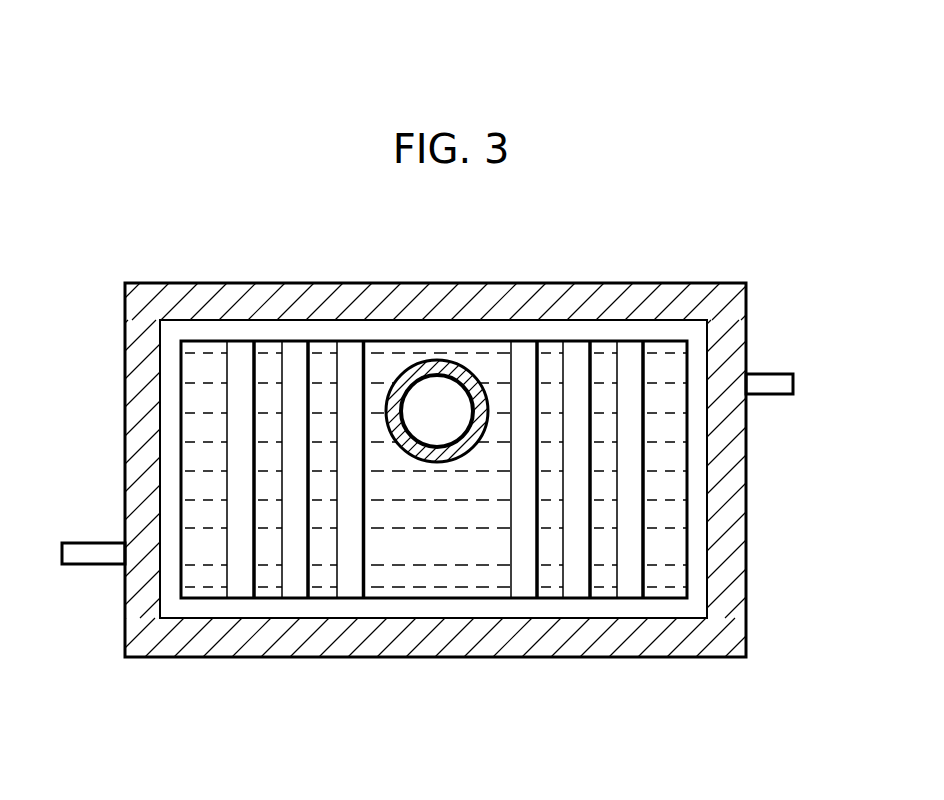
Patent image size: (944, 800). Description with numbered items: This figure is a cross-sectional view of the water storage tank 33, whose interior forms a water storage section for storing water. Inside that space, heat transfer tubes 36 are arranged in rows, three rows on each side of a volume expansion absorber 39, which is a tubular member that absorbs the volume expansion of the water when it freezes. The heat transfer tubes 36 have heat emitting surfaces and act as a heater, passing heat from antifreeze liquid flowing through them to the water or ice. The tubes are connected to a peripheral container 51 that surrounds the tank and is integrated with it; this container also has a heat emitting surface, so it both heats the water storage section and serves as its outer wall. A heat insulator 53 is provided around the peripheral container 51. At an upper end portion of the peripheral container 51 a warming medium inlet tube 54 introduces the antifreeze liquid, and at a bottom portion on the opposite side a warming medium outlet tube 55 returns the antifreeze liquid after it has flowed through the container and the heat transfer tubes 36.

The water storage tank 33 is at (630, 277).
The heat transfer tubes 36 is at (240, 460).
The volume expansion absorber 39 is at (438, 362).
The peripheral container 51 is at (267, 334).
The heat insulator 53 is at (737, 512).
The warming medium inlet tube 54 is at (780, 374).
The warming medium outlet tube 55 is at (93, 566).